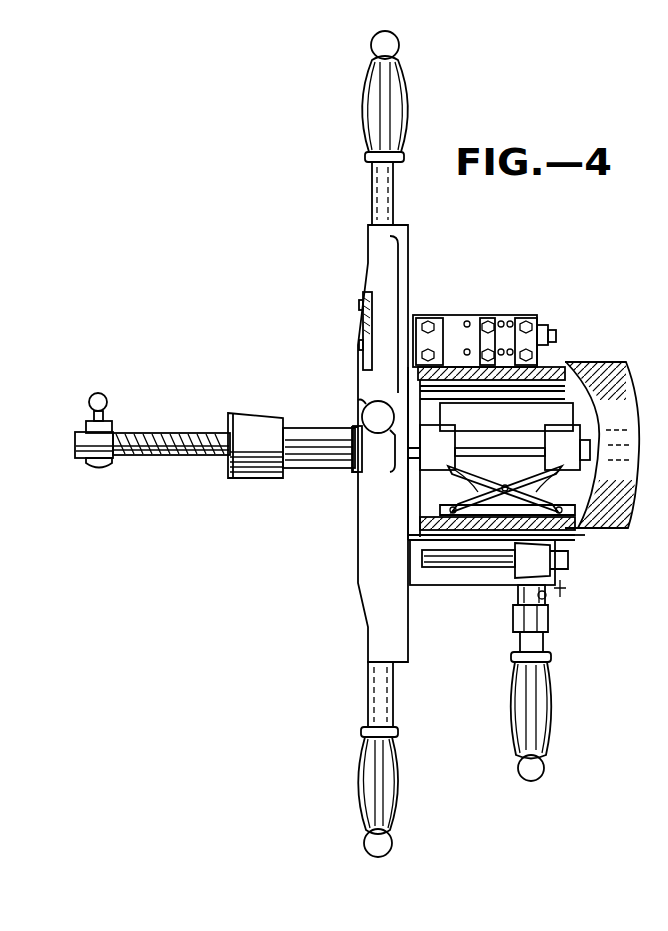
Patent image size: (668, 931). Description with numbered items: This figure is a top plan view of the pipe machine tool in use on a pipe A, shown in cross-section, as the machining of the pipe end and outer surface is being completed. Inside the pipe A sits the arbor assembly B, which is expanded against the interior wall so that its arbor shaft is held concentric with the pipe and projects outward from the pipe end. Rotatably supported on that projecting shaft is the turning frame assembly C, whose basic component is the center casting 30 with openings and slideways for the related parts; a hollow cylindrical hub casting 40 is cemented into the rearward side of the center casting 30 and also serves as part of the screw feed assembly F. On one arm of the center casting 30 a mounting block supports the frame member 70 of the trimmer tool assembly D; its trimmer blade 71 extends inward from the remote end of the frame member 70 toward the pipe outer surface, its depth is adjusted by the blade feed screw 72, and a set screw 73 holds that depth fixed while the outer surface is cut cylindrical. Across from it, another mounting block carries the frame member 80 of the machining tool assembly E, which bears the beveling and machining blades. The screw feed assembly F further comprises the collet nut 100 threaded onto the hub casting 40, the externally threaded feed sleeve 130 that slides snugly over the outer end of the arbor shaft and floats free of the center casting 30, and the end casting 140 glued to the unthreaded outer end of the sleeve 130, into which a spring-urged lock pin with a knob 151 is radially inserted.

The center casting 30 is at (381, 540).
The hub casting 40 is at (300, 436).
The frame member 70 is at (434, 585).
The trimmer blade 71 is at (556, 535).
The blade feed screw 72 is at (548, 642).
The set screw 73 is at (556, 580).
The frame member 80 is at (470, 318).
The collet nut 100 is at (250, 478).
The feed tube or sleeve 130 is at (186, 460).
The end casting 140 is at (92, 462).
The knob 151 is at (110, 397).
The pipe A is at (618, 360).
The arbor assembly B is at (553, 390).
The turning frame assembly C is at (356, 265).
The trimmer tool assembly D is at (495, 600).
The machining tool assembly E is at (447, 312).
The screw feed assembly F is at (215, 396).